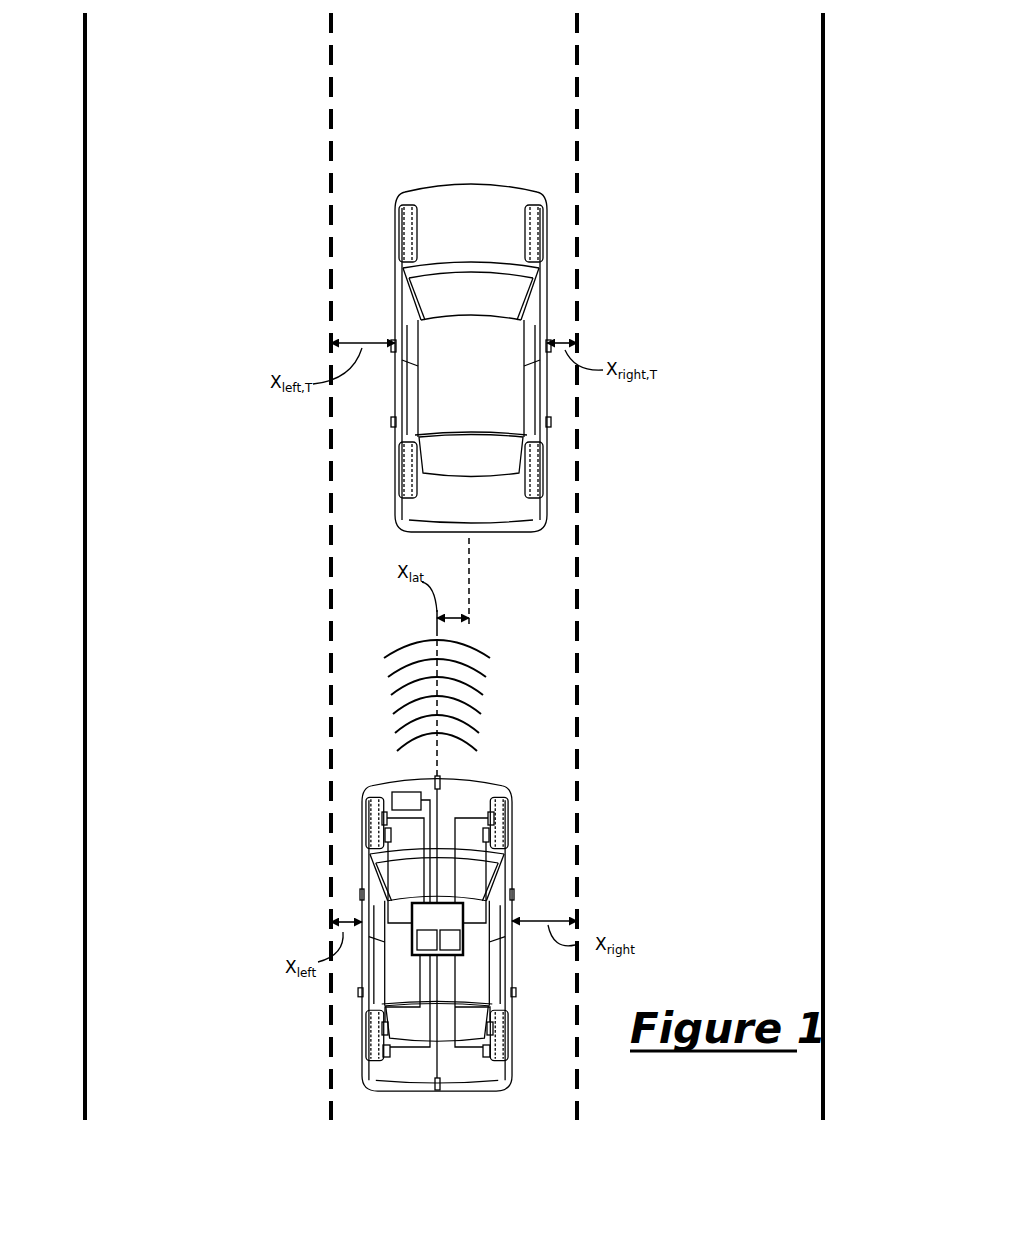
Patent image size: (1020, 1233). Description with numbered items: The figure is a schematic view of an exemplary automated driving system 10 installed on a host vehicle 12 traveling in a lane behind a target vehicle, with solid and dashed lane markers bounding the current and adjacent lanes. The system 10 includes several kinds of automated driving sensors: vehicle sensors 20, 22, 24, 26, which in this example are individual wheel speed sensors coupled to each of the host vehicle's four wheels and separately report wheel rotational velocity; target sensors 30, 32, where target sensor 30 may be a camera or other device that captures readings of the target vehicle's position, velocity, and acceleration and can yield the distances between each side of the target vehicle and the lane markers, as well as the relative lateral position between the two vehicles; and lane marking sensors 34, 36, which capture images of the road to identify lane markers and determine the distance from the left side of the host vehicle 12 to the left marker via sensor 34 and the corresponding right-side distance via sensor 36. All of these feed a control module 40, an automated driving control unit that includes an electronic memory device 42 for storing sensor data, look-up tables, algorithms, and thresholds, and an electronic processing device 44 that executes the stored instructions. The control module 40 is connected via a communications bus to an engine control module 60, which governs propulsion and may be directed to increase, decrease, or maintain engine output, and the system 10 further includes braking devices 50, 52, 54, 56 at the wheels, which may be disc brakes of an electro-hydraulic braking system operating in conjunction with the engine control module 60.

The automated driving system 10 is at (446, 889).
The host vehicle 12 is at (310, 757).
The wheel speed sensor 20 is at (488, 840).
The wheel speed sensor 22 is at (487, 1052).
The wheel speed sensor 24 is at (386, 1052).
The wheel speed sensor 26 is at (388, 840).
The target sensor 30 is at (434, 778).
The target sensor 32 is at (435, 1083).
The lane marking sensor 34 is at (360, 893).
The lane marking sensor 36 is at (514, 893).
The control module 40 is at (437, 929).
The electronic memory device 42 is at (420, 947).
The electronic processing device 44 is at (450, 945).
The braking device 50 is at (489, 815).
The braking device 52 is at (493, 1030).
The braking device 54 is at (382, 1028).
The braking device 56 is at (383, 818).
The engine control module 60 is at (396, 803).